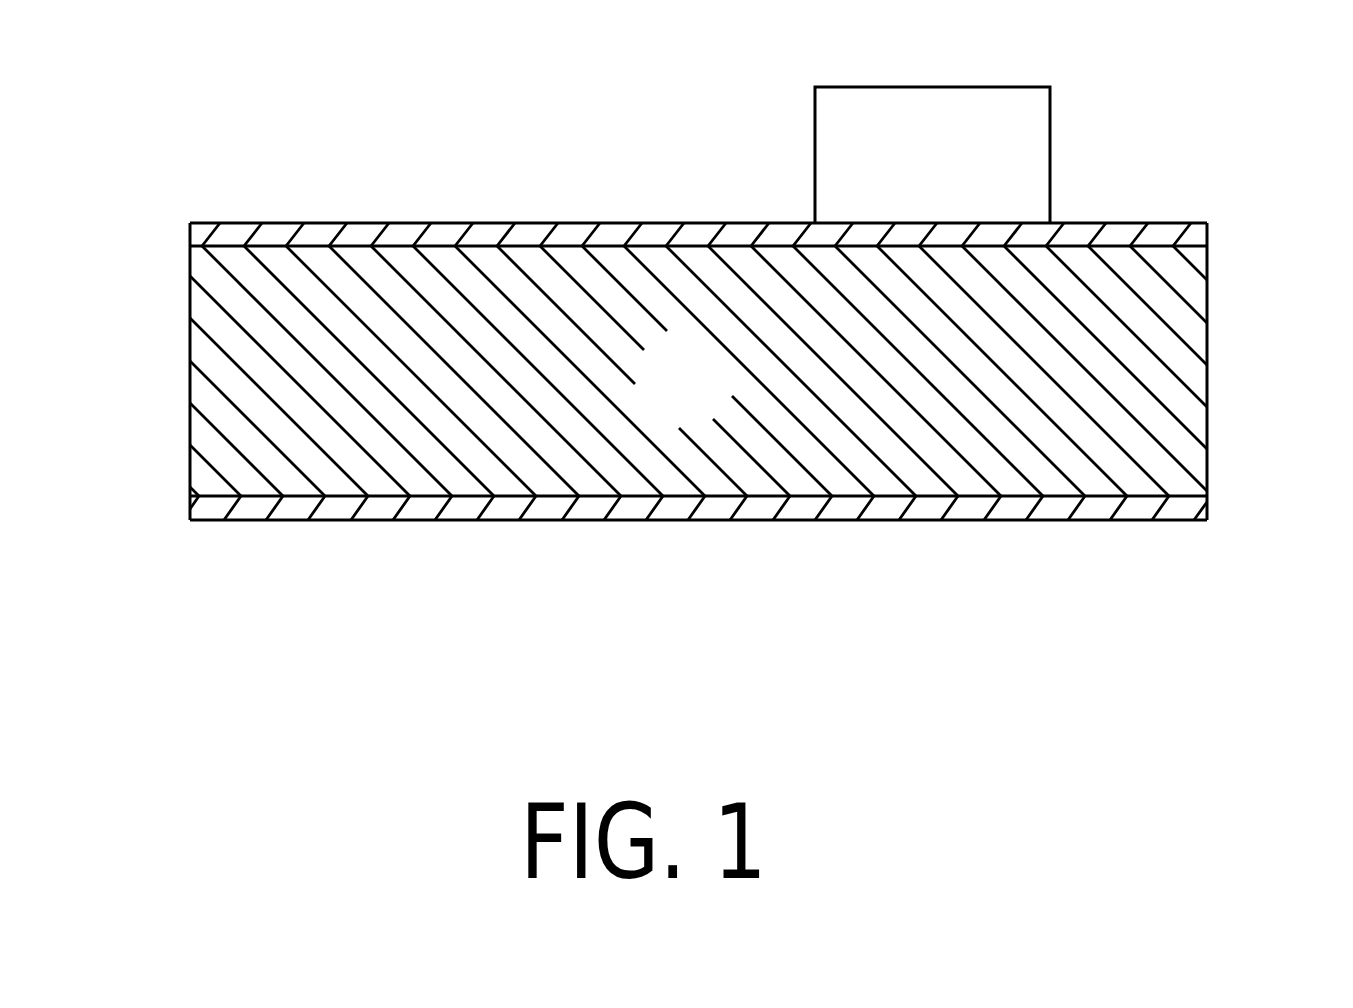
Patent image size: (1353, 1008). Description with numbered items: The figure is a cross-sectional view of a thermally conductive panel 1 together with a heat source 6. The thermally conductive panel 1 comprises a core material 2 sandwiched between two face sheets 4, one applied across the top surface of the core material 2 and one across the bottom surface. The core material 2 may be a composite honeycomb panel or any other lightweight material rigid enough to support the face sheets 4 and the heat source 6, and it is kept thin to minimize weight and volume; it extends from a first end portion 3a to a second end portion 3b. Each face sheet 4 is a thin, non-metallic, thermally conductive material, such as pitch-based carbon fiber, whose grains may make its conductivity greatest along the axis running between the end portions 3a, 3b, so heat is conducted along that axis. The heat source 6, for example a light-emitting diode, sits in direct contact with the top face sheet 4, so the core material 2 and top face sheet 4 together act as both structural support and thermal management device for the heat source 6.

The thermally conductive panel 1 is at (578, 582).
The core material 2 is at (673, 398).
The first end portion 3a is at (182, 388).
The second end portion 3b is at (1218, 386).
The face sheet 4 is at (316, 228).
The heat source 6 is at (841, 97).